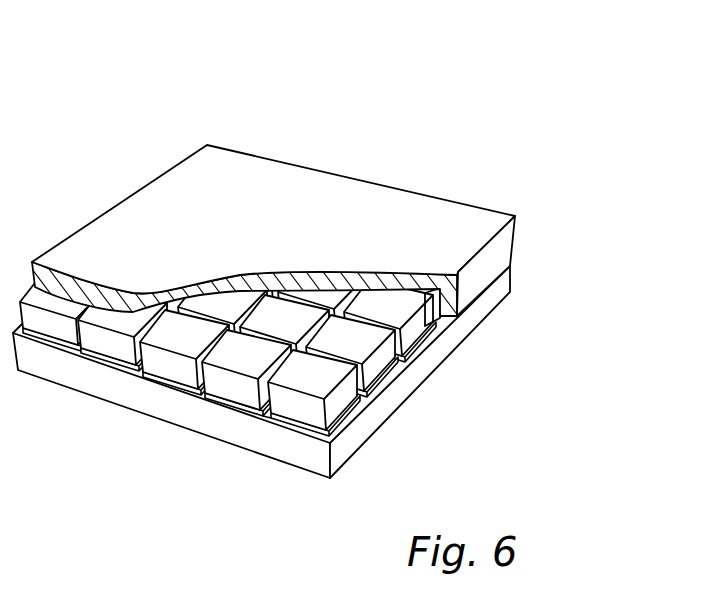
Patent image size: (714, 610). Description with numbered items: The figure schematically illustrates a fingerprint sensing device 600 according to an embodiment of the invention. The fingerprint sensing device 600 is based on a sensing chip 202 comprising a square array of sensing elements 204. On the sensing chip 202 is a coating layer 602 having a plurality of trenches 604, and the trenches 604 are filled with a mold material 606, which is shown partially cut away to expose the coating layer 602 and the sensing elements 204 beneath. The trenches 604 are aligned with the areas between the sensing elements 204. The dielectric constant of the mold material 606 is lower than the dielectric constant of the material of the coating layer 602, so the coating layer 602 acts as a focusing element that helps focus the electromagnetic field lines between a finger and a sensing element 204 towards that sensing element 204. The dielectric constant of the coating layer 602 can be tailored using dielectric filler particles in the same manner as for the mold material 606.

The fingerprint sensing device 600 is at (304, 258).
The mold material 606 is at (484, 262).
The sensing chip 202 is at (450, 333).
The sensing elements 204 is at (350, 412).
The coating layer 602 is at (165, 367).
The trenches 604 is at (263, 413).